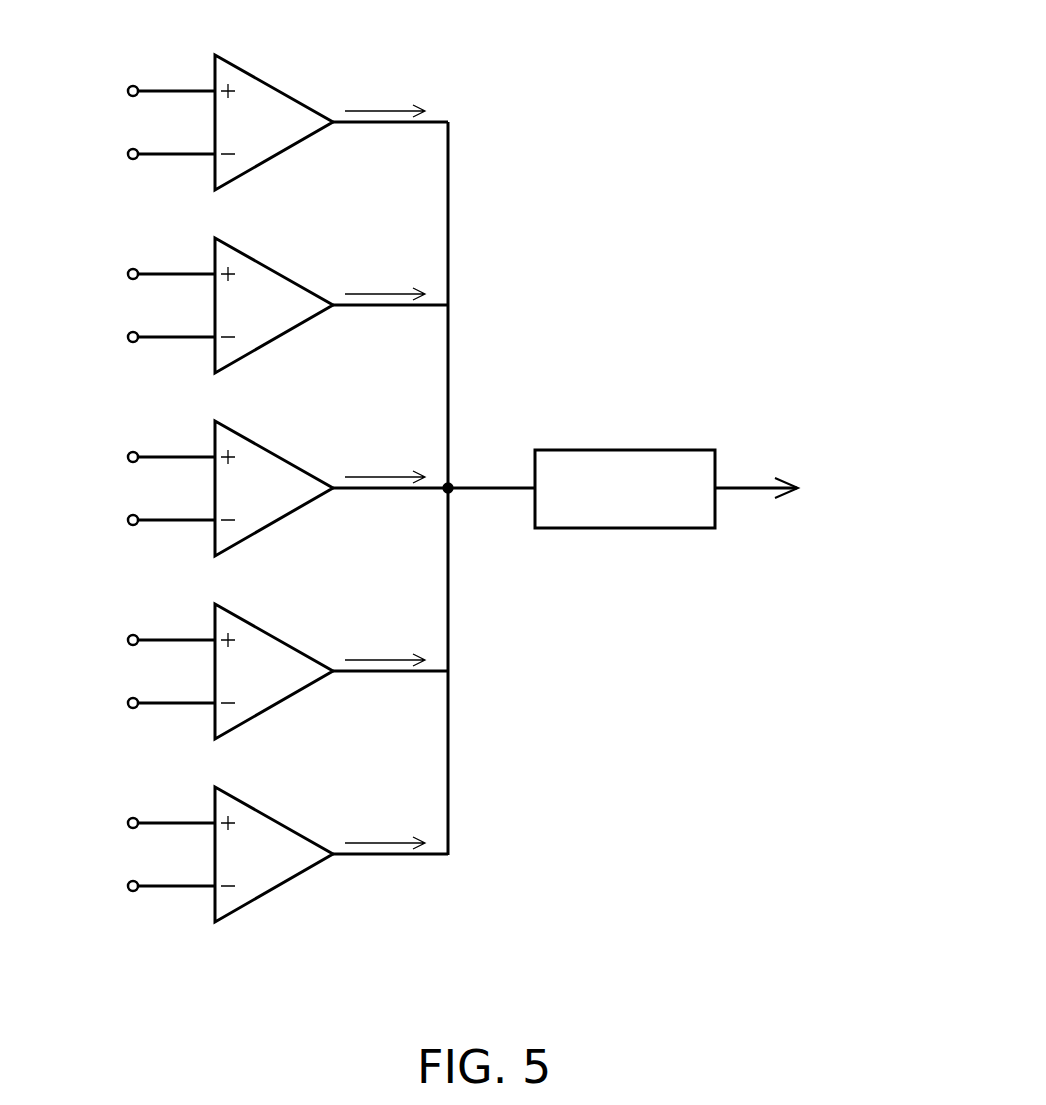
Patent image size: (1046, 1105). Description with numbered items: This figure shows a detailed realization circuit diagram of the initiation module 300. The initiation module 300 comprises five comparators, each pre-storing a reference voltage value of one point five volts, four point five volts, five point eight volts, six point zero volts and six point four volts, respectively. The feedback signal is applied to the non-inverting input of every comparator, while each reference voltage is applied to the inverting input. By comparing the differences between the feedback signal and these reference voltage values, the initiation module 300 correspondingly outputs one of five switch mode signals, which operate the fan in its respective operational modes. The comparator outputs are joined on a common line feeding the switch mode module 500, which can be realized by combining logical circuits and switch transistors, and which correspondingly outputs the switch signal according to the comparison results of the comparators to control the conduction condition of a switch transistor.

The initiation module 300 is at (733, 56).
The switch mode module 500 is at (676, 450).